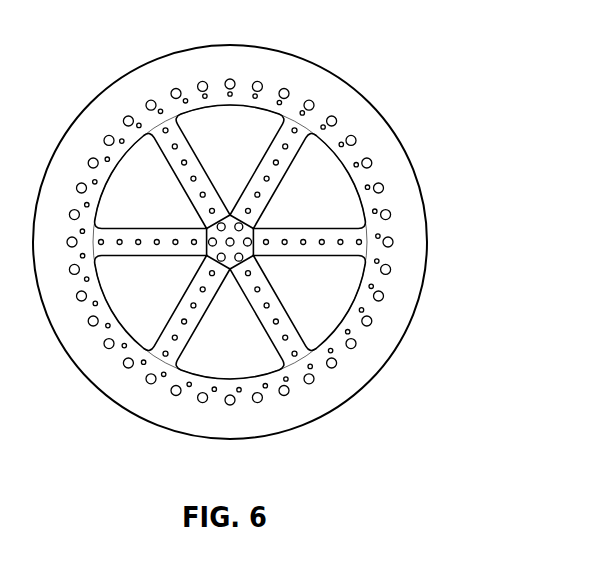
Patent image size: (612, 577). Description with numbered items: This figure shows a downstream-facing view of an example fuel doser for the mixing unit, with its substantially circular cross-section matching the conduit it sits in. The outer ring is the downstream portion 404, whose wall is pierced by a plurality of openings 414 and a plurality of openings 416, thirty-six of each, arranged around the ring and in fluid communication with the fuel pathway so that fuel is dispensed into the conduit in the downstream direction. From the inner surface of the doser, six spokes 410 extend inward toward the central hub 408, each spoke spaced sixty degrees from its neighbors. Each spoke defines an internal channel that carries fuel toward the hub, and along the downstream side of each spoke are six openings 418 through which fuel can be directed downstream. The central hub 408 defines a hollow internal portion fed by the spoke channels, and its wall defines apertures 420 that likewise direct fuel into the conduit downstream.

The downstream portion 404 is at (226, 58).
The central hub 408 is at (229, 249).
The spokes 410 is at (301, 112).
The openings 414 is at (367, 160).
The openings 416 is at (380, 237).
The openings 418 is at (288, 340).
The apertures 420 is at (241, 257).